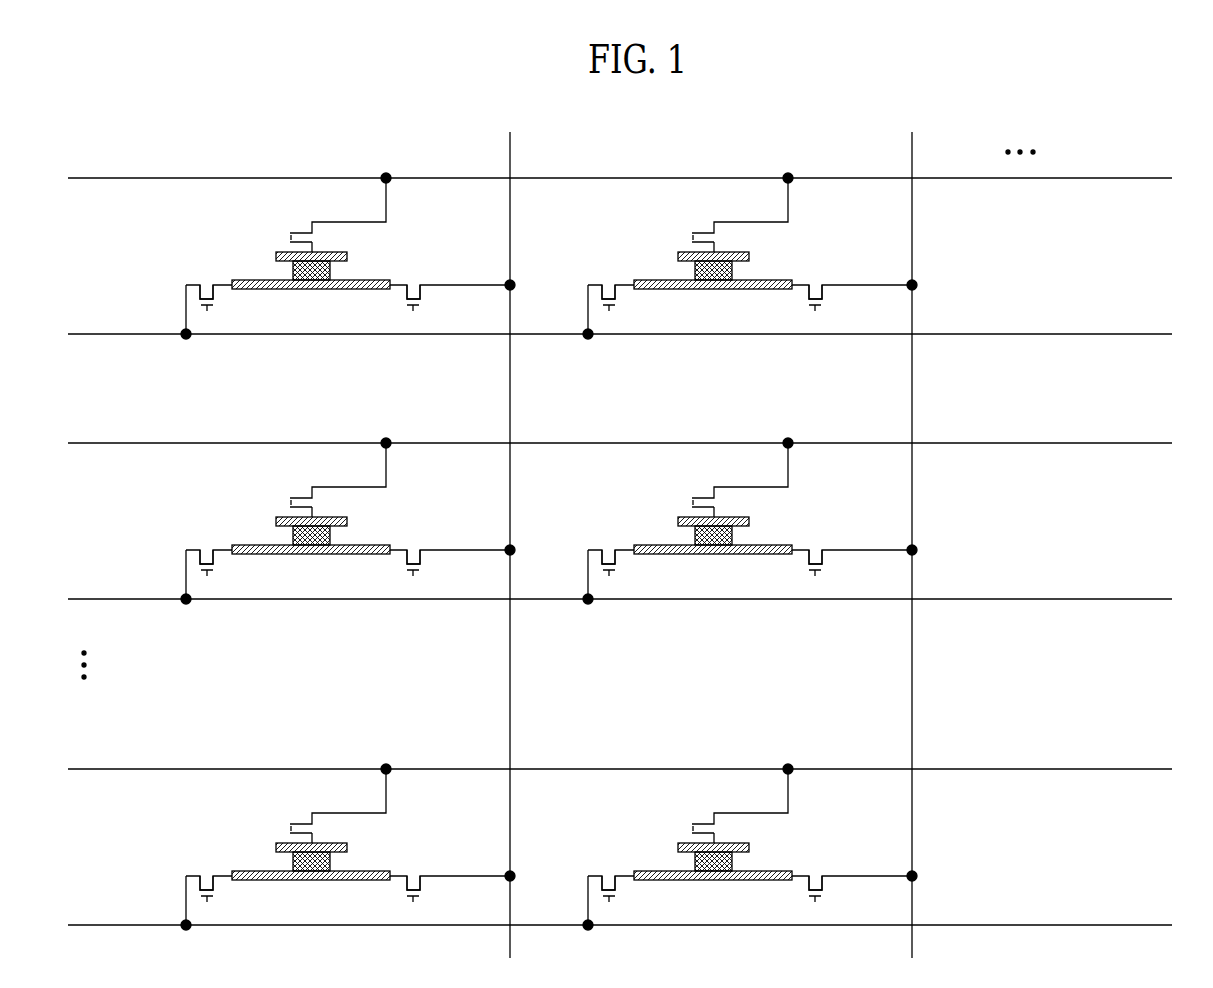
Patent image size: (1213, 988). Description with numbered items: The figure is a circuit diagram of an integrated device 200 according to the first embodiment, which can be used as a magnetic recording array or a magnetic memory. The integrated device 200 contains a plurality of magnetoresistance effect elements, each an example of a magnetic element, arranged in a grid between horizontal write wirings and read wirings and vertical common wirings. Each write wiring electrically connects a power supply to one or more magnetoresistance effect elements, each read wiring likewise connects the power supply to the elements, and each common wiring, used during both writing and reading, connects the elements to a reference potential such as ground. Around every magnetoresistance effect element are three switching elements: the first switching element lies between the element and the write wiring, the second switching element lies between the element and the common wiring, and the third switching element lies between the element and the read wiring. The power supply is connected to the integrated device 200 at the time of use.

The integrated device 200 is at (1091, 162).